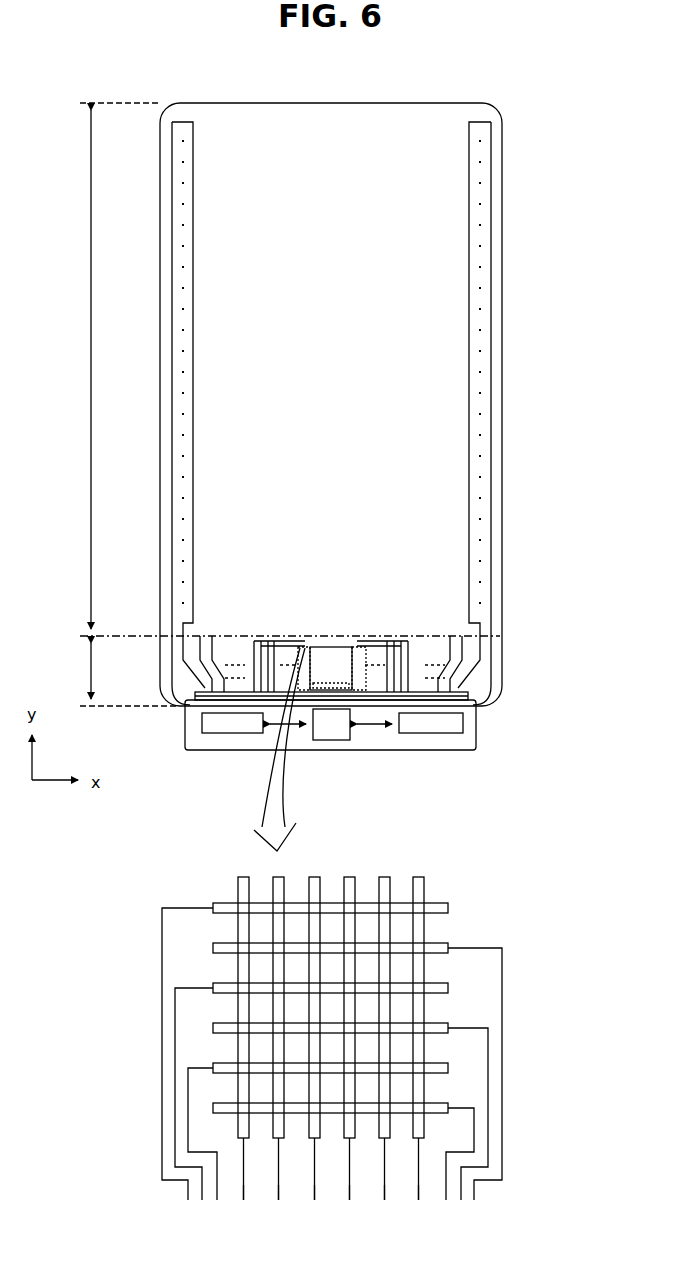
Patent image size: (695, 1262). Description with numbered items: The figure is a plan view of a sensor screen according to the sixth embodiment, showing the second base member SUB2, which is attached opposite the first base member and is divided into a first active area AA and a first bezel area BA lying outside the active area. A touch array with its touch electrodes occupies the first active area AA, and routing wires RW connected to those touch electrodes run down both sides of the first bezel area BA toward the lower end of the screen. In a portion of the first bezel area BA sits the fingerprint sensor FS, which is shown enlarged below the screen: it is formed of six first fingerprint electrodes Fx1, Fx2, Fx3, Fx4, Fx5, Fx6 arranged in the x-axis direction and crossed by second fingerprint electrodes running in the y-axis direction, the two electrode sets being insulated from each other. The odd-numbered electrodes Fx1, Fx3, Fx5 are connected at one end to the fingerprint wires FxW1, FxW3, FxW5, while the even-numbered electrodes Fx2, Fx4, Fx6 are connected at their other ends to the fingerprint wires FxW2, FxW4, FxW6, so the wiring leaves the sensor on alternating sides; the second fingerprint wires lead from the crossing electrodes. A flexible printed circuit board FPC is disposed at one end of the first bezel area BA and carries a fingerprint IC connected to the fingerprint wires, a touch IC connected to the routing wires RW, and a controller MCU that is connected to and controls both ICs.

The first active area AA is at (75, 369).
The first bezel area BA is at (75, 671).
The routing wires RW is at (207, 670).
The fingerprint sensor FS is at (330, 648).
The second base member SUB2 is at (468, 697).
The flexible printed circuit board FPC is at (464, 750).
The controller MCU is at (328, 740).
The first fingerprint electrode Fx1 is at (436, 904).
The first fingerprint electrode Fx2 is at (436, 944).
The first fingerprint electrode Fx3 is at (436, 984).
The first fingerprint electrode Fx4 is at (436, 1024).
The first fingerprint electrode Fx5 is at (436, 1064).
The first fingerprint electrode Fx6 is at (436, 1104).
The 1-1 fingerprint wire FxW1 is at (162, 1081).
The 1-2 fingerprint wire FxW2 is at (502, 1081).
The 1-1 fingerprint wire FxW3 is at (175, 1106).
The 1-2 fingerprint wire FxW4 is at (488, 1108).
The 1-1 fingerprint wire FxW5 is at (188, 1134).
The 1-2 fingerprint wire FxW6 is at (474, 1133).